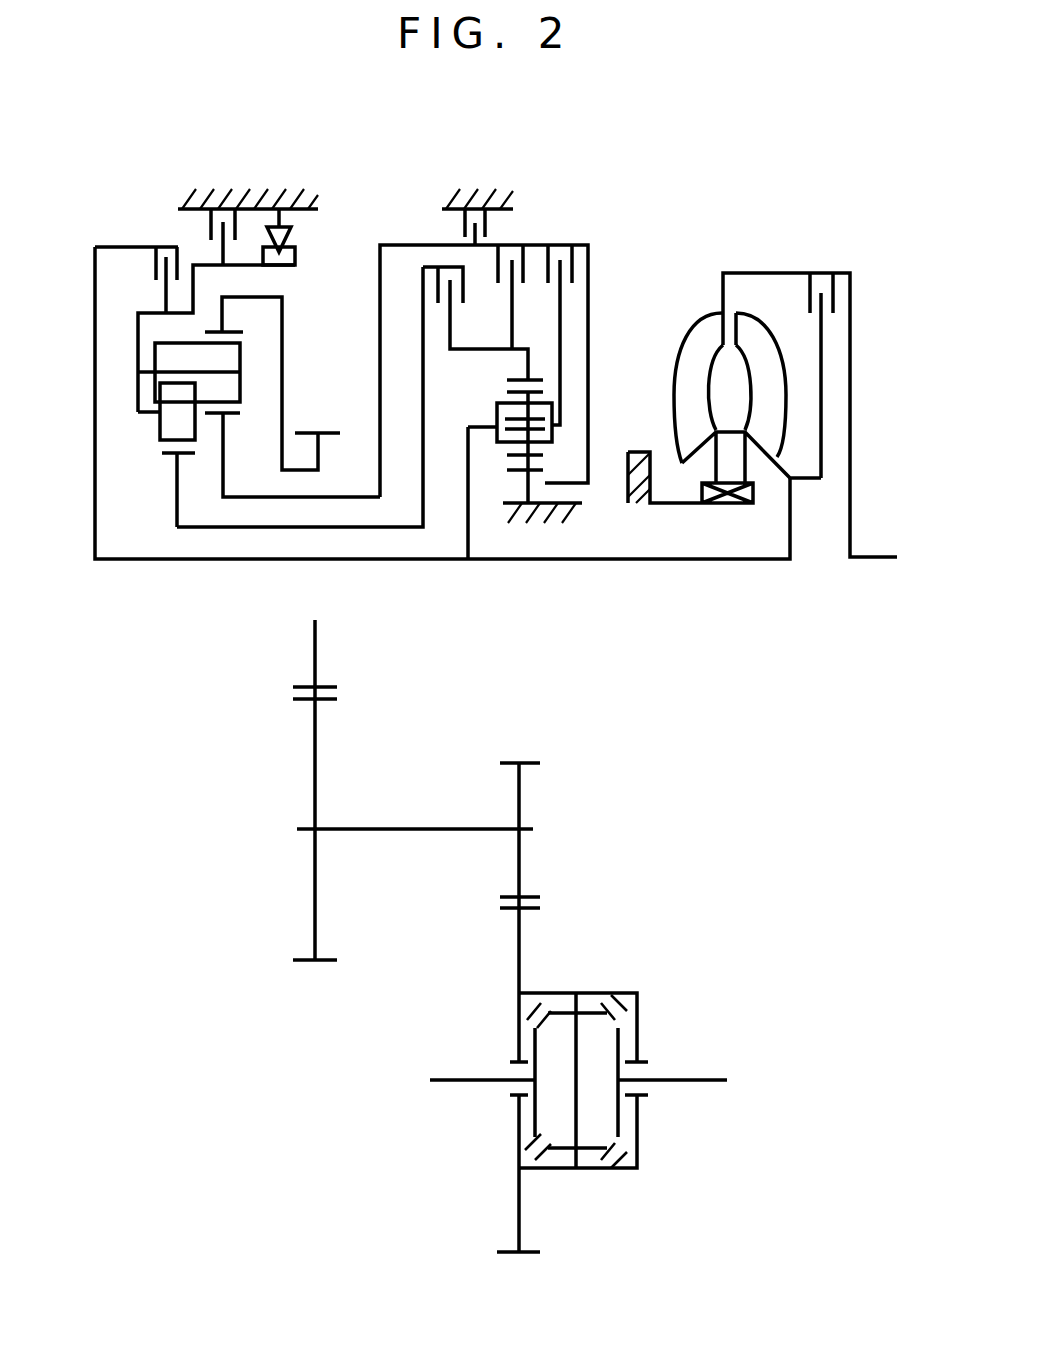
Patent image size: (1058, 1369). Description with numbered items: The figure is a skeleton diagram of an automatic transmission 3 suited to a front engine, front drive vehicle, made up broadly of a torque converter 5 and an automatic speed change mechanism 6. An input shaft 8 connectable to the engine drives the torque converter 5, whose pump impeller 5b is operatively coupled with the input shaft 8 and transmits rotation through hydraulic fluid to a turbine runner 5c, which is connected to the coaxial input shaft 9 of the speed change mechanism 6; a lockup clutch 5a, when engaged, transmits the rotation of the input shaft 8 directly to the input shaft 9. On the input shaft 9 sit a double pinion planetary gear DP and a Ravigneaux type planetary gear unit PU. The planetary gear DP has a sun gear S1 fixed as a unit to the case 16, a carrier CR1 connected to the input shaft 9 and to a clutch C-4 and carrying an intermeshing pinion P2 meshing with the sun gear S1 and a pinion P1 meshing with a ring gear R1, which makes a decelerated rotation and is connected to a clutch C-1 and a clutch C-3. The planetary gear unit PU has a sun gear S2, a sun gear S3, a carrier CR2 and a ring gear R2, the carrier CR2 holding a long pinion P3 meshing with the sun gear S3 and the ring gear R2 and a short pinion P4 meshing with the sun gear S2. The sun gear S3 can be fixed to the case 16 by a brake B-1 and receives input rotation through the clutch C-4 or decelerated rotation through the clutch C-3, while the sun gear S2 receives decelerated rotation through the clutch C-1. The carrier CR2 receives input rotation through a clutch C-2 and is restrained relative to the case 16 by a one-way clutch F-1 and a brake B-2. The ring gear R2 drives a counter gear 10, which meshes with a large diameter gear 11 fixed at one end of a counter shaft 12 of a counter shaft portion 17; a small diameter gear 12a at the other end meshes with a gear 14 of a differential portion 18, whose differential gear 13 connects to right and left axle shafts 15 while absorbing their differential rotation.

The automatic transmission 3 is at (658, 170).
The torque converter 5 is at (736, 262).
The lockup clutch 5a is at (832, 302).
The pump impeller 5b is at (680, 365).
The turbine runner 5c is at (750, 335).
The automatic speed change mechanism 6 is at (375, 194).
The input shaft 8 is at (870, 556).
The input shaft 9 is at (575, 560).
The counter gear 10 is at (320, 433).
The large diameter gear 11 is at (318, 740).
The counter shaft 12 is at (406, 832).
The small diameter gear 12a is at (524, 790).
The differential gear 13 is at (603, 1170).
The gear 14 is at (524, 942).
The axle shafts 15 is at (455, 1084).
The case 16 is at (184, 203).
The counter shaft portion 17 is at (290, 808).
The differential portion 18 is at (668, 975).
The planetary gear unit PU is at (137, 330).
The planetary gear DP is at (548, 358).
The carrier CR1 is at (556, 437).
The carrier CR2 is at (126, 345).
The ring gear R1 is at (512, 378).
The ring gear R2 is at (238, 328).
The sun gear S1 is at (518, 470).
The sun gear S2 is at (170, 455).
The sun gear S3 is at (225, 420).
The pinion P1 is at (512, 392).
The pinion P2 is at (516, 455).
The long pinion P3 is at (244, 358).
The short pinion P4 is at (160, 426).
The clutch C-1 is at (475, 323).
The clutch C-2 is at (158, 267).
The clutch C-3 is at (508, 286).
The clutch C-4 is at (567, 324).
The brake B-1 is at (479, 202).
The brake B-2 is at (215, 213).
The one-way clutch F-1 is at (280, 213).